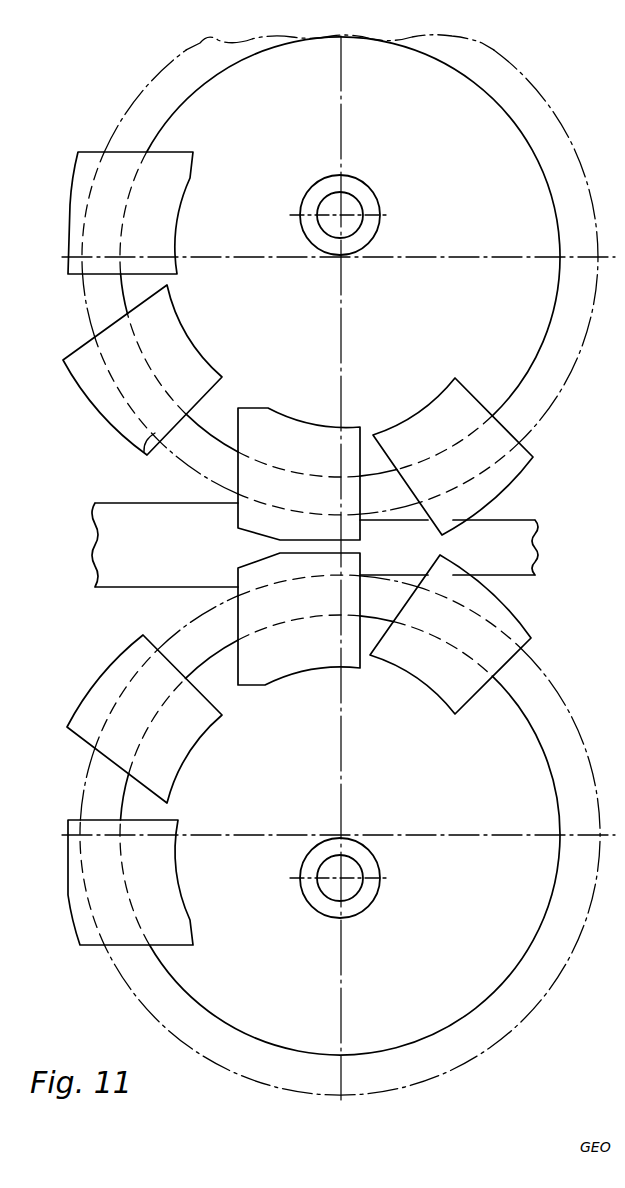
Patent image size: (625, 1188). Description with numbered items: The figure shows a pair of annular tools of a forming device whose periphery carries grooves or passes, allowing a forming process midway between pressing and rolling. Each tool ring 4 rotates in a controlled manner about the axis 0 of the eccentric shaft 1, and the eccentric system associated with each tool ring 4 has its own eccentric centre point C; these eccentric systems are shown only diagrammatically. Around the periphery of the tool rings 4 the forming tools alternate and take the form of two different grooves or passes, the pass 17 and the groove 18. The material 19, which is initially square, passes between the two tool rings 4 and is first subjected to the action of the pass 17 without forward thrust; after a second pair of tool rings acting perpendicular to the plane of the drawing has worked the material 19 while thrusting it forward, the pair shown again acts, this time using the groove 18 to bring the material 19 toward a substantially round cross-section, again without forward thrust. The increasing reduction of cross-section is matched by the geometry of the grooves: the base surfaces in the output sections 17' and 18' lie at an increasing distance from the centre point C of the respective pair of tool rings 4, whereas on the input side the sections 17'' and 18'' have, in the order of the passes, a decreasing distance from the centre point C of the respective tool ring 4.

The axis of the eccentric shaft 0 is at (342, 213).
The eccentric shaft 1 is at (352, 219).
The eccentric centre point C is at (341, 258).
The tool ring 4 is at (563, 198).
The pass 17 is at (142, 544).
The output section of pass 17 17' is at (152, 405).
The input section of pass 17 17'' is at (147, 385).
The groove 18 is at (130, 576).
The output section of groove 18 18' is at (115, 234).
The input section of groove 18 18'' is at (128, 192).
The material 19 is at (133, 575).